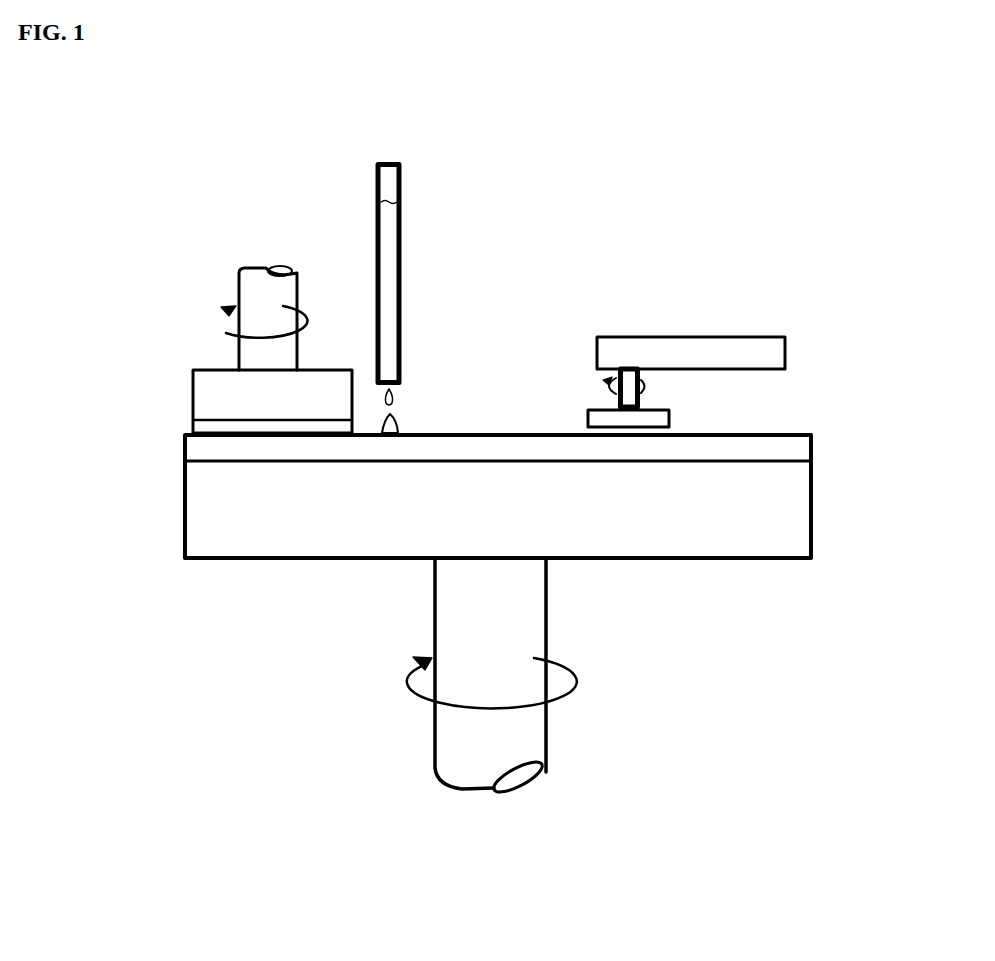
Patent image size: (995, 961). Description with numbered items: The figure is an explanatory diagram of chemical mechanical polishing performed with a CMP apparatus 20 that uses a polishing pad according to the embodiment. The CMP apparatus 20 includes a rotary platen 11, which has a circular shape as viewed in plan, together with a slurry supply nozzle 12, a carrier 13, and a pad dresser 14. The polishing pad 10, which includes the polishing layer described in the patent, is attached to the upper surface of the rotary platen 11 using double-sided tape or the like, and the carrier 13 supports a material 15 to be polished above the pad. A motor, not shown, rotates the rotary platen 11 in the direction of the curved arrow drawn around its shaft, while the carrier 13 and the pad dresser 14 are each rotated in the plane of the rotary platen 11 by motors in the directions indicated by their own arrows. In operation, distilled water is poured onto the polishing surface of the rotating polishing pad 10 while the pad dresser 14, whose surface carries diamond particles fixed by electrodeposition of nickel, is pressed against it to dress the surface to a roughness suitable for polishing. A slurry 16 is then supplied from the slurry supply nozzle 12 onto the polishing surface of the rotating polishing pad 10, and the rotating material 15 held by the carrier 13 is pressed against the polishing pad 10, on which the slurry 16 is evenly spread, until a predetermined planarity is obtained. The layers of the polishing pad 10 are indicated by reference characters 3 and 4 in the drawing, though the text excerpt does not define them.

The CMP apparatus 20 is at (193, 171).
The polishing pad 10 is at (534, 467).
The front surface layer of substrate 3 is at (744, 434).
The back surface layer of substrate 4 is at (764, 463).
The rotary platen 11 is at (217, 528).
The slurry supply nozzle 12 is at (400, 203).
The carrier 13 is at (210, 386).
The pad dresser 14 is at (670, 417).
The material to be polished 15 is at (195, 427).
The slurry 16 is at (397, 420).